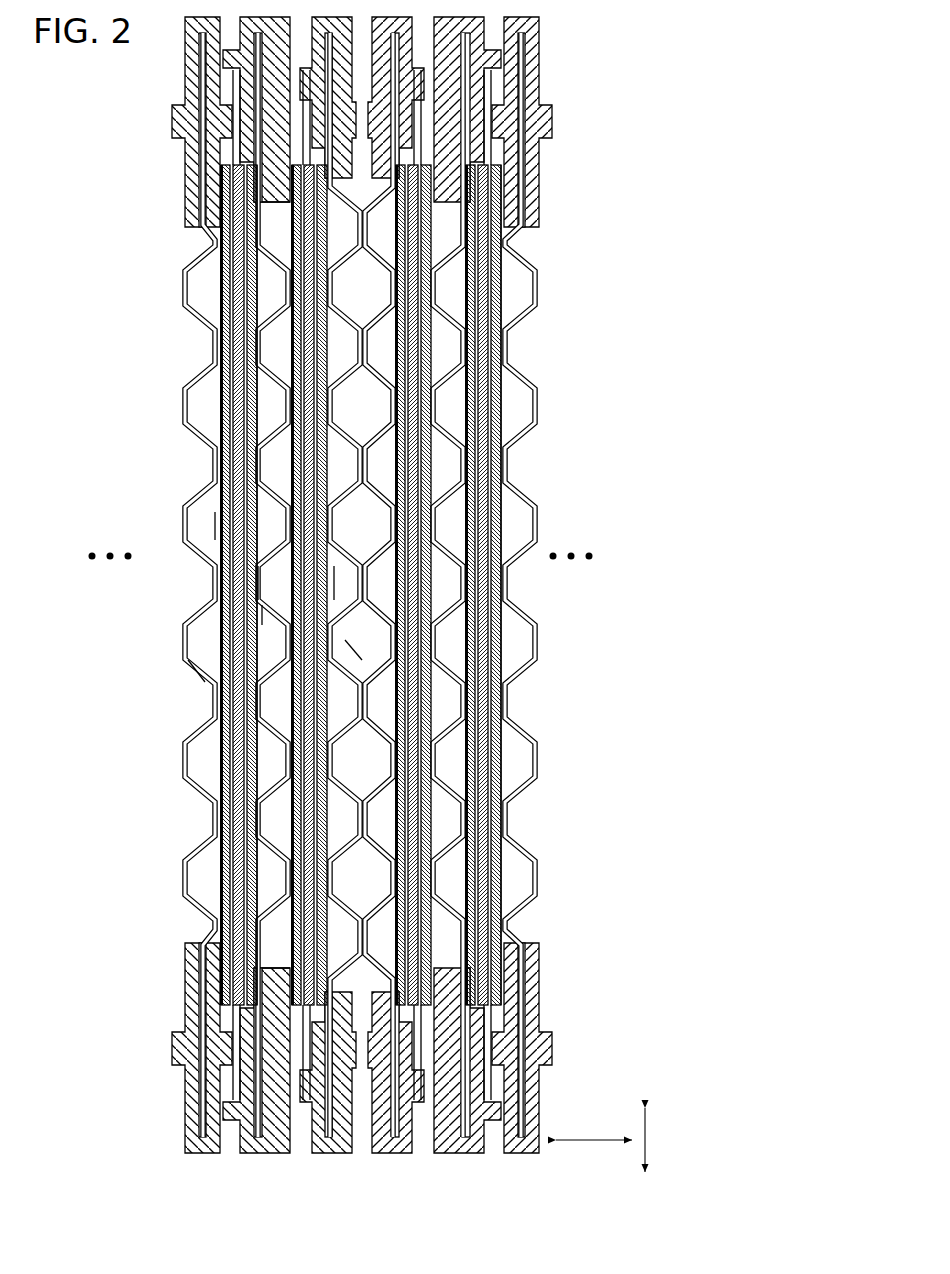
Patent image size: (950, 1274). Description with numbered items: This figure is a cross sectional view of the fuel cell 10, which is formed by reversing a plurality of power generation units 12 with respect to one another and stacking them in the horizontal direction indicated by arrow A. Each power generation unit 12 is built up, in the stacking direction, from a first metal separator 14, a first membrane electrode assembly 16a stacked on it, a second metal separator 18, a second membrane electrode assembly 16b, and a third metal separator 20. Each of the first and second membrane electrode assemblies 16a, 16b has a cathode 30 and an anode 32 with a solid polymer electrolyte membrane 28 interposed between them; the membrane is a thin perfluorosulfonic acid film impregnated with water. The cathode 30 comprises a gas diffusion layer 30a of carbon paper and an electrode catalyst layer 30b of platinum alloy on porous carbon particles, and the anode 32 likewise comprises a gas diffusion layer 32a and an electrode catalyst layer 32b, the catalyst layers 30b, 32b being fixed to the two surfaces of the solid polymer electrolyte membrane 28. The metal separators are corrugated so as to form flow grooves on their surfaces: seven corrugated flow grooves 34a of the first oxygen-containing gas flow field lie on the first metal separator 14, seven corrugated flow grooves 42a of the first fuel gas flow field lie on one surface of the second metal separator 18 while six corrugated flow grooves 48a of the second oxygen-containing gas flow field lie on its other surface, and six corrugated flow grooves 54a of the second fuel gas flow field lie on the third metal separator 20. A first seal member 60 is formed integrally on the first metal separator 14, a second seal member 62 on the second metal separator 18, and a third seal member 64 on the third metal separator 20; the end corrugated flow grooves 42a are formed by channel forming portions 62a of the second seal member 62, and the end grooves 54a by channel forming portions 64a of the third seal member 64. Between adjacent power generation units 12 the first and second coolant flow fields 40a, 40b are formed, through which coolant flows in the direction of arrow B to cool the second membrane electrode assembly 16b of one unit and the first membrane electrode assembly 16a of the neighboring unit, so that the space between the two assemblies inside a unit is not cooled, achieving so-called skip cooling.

The fuel cell 10 is at (598, 38).
The power generation unit 12 is at (112, 712).
The first metal separator 14 is at (355, 943).
The first membrane electrode assembly 16a is at (644, 325).
The second membrane electrode assembly 16b is at (90, 395).
The second metal separator 18 is at (262, 782).
The third metal separator 20 is at (212, 720).
The solid polymer electrolyte membrane 28 is at (238, 447).
The cathode 30 is at (140, 455).
The gas diffusion layer 30a is at (240, 470).
The electrode catalyst layer 30b is at (246, 490).
The anode 32 is at (140, 387).
The gas diffusion layer 32a is at (222, 400).
The electrode catalyst layer 32b is at (222, 422).
The corrugated flow grooves 34a is at (335, 580).
The first coolant flow field 40a is at (356, 655).
The second coolant flow field 40b is at (207, 685).
The corrugated flow grooves 42a is at (247, 605).
The corrugated flow grooves 48a is at (222, 572).
The corrugated flow grooves 54a is at (208, 531).
The first seal member 60 is at (345, 86).
The second seal member 62 is at (242, 135).
The channel forming portions 62a is at (272, 195).
The third seal member 64 is at (195, 75).
The channel forming portions 64a is at (192, 262).